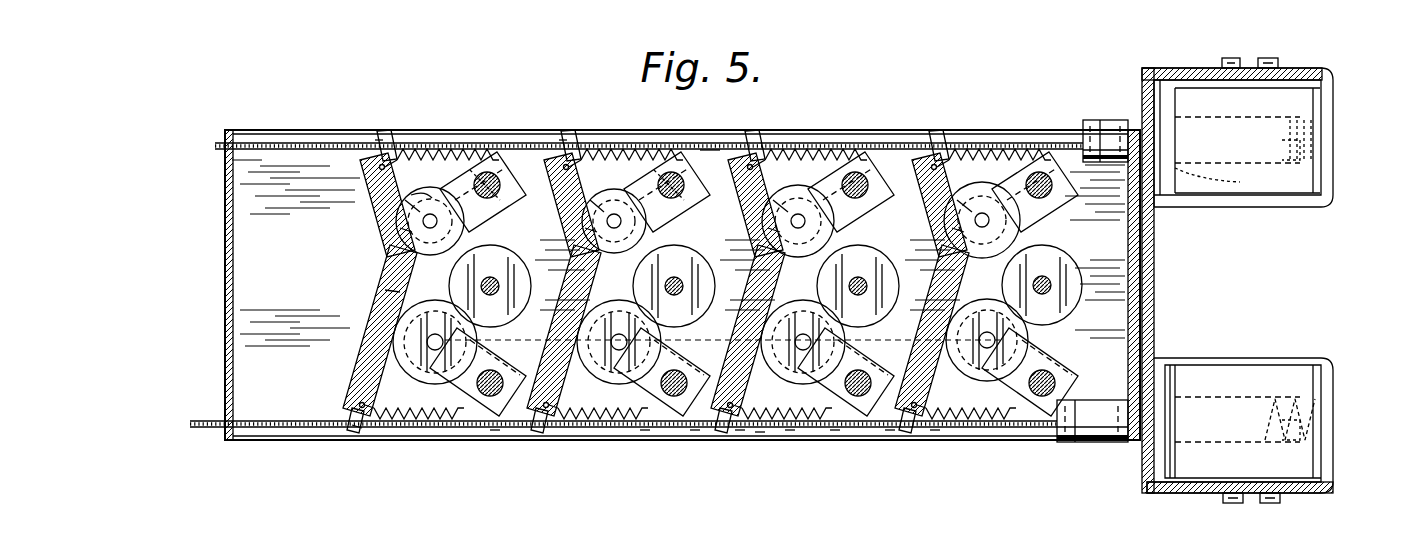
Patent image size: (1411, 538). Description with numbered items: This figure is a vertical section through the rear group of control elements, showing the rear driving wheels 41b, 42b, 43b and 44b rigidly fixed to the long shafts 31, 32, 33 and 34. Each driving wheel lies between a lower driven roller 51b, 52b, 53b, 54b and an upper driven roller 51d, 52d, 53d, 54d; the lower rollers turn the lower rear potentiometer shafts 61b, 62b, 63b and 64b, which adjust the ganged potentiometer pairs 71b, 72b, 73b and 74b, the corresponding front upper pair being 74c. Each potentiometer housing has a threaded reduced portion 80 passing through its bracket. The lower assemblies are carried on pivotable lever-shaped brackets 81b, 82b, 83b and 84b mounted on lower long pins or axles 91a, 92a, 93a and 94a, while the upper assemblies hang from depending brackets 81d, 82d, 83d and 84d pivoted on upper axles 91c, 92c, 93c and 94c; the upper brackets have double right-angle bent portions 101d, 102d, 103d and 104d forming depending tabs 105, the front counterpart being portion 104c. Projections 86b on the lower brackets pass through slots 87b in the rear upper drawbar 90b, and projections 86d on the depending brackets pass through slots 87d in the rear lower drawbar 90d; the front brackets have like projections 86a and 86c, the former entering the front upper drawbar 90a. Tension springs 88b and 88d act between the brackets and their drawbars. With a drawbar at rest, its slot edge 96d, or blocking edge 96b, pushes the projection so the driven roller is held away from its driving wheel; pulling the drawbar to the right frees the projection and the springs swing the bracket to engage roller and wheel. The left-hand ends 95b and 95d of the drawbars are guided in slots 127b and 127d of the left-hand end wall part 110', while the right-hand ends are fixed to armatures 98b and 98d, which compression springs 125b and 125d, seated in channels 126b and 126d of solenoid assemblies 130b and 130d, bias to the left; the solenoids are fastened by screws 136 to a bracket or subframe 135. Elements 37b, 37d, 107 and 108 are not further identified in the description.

The left-hand end wall part 110' is at (639, 285).
The guide slot 127b is at (226, 182).
The guide slot 127d is at (240, 421).
The left-hand end of drawbar 95b is at (232, 147).
The left-hand end of drawbar 95d is at (226, 427).
The armature 98b is at (1100, 120).
The armature 98d is at (1105, 442).
The bracket or subframe 135 is at (1155, 271).
The compression spring 125b is at (1322, 137).
The central longitudinal channel 126b is at (1335, 186).
The solenoid assembly 130b is at (1283, 195).
The screws 136 is at (1268, 58).
The compression spring 125d is at (1322, 414).
The central longitudinal channel 126d is at (1337, 467).
The solenoid assembly 130d is at (1300, 480).
The projection 86b is at (384, 133).
The blocking edge 96b is at (400, 152).
The tension springs 88b is at (440, 156).
The projection 86d is at (357, 432).
The slot edge part 96d is at (393, 440).
The tension springs 88d is at (412, 440).
The pivotable lever-shaped bracket 81b is at (374, 232).
The depending pivotal bracket 81d is at (360, 346).
The upper stop 37b is at (378, 137).
The lower stop 37d is at (355, 440).
The rear driving wheel 41b is at (432, 252).
The threaded reduced portion 80 is at (422, 240).
The shaft 31 is at (523, 300).
The upper rear driven wheel 51d is at (492, 276).
The lower rear potentiometer shaft 61b is at (478, 345).
The lower rear driven wheel 51b is at (430, 350).
The double right-angle bent portion 101d is at (506, 212).
The upper long pin or axle 91c is at (500, 173).
The pivotable lever-shaped bracket 82b is at (503, 200).
The ganged potentiometer pair 71b is at (388, 296).
The ganged potentiometer pair 72b is at (552, 326).
The lower long pin or axle 91a is at (505, 440).
The slot 87d is at (495, 445).
The depending pivotal bracket 82d is at (551, 440).
The depending pivotal bracket 83d is at (712, 440).
The slots 87b is at (561, 133).
The rear driving wheel 42b is at (616, 252).
The shaft 32 is at (700, 290).
The upper rear driven wheel 52d is at (712, 292).
The lower rear potentiometer shaft 62b is at (619, 372).
The lower rear driven wheel 52b is at (615, 352).
The double right-angle bent portion 102d is at (675, 226).
The upper long pin or axle 92c is at (684, 176).
The pivotable lever-shaped bracket 83b is at (686, 205).
The ganged potentiometer pair 73b is at (736, 325).
The lower long pin or axle 92a is at (660, 440).
The rear upper drawbar 90b is at (712, 150).
The rear lower drawbar 90d is at (760, 440).
The depending pivotal bracket 84d is at (886, 434).
The rear driving wheel 43b is at (800, 252).
The shaft 33 is at (892, 290).
The upper rear driven wheel 53d is at (896, 292).
The lower rear potentiometer shaft 63b is at (803, 372).
The lower rear driven wheel 53b is at (799, 352).
The double right-angle bent portion 103d is at (876, 222).
The upper long pin or axle 93c is at (868, 175).
The ganged potentiometer pair 74b is at (916, 326).
The lower long pin or axle 93a is at (845, 440).
The pivotable lever-shaped bracket 84b is at (928, 160).
The lower long pin or axle 94a is at (1040, 440).
The rear driving wheel 44b is at (985, 252).
The shaft 34 is at (1052, 285).
The upper rear driven wheel 54d is at (1070, 290).
The lower rear potentiometer shaft 64b is at (988, 370).
The lower rear driven wheel 54b is at (983, 350).
The double right-angle bent portion 104d is at (1040, 230).
The upper long pin or axle 94c is at (1040, 155).
The ganged potentiometer pair 74c is at (952, 433).
The guide 108 is at (647, 484).
The front upper drawbar 90a is at (694, 484).
The projection 86a is at (739, 483).
The double right-angle bent portion 104c is at (790, 484).
The depending tab portions 105 is at (835, 482).
The guide 107 is at (890, 483).
The projection 86c is at (935, 483).